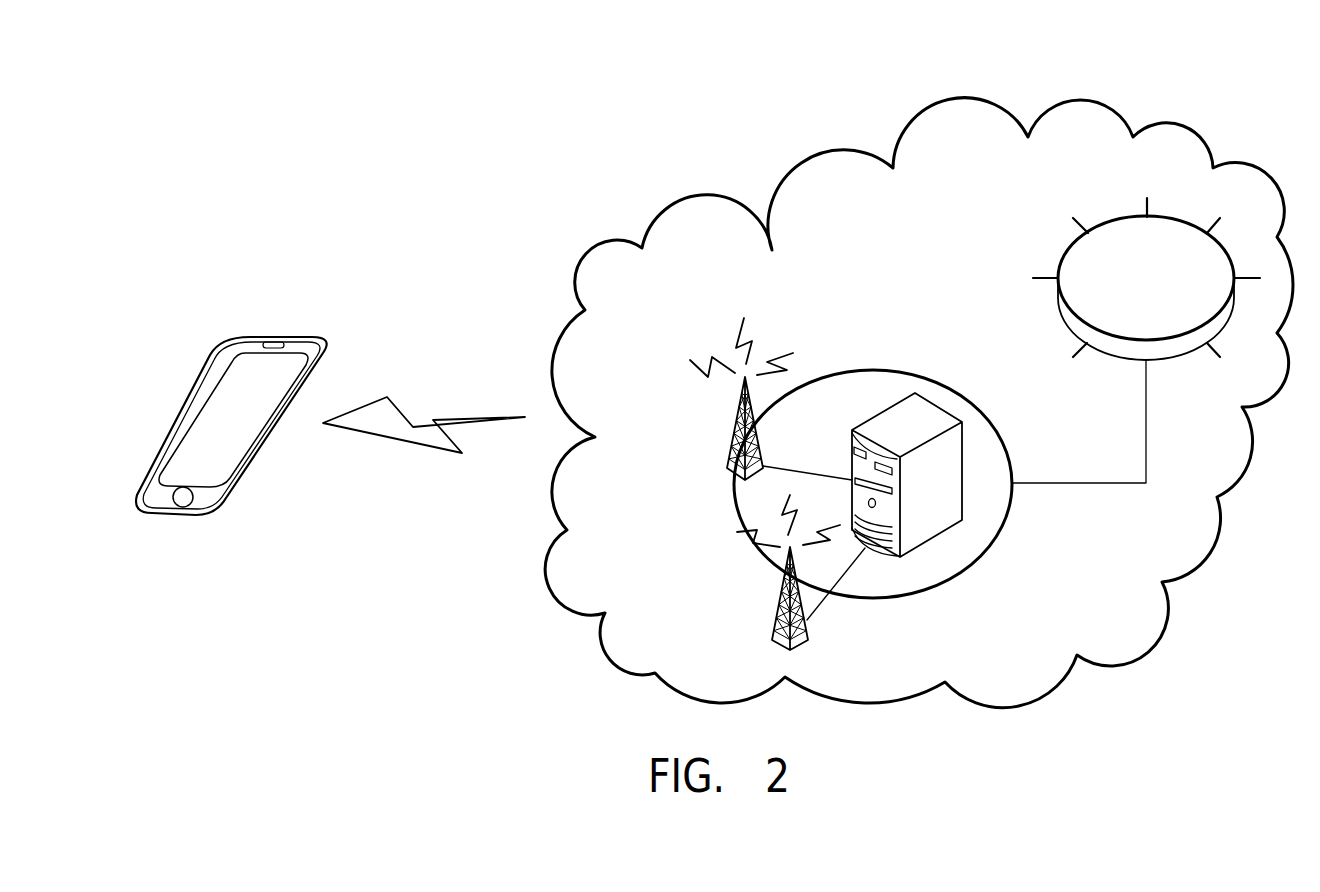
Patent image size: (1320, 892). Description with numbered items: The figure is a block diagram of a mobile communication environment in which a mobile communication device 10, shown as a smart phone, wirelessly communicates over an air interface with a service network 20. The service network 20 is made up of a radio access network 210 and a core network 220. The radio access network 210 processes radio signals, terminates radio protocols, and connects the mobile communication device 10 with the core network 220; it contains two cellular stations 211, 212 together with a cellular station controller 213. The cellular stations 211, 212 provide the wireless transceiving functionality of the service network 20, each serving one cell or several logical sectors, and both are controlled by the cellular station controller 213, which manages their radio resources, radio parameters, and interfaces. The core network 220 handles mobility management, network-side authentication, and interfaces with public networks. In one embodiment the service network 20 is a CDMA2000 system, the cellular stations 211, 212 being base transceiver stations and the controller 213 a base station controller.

The mobile communication device 10 is at (177, 516).
The service network 20 is at (837, 148).
The radio access network 210 is at (973, 568).
The cellular station 211 is at (732, 443).
The cellular station 212 is at (775, 612).
The cellular station controller 213 is at (940, 403).
The core network 220 is at (1067, 250).